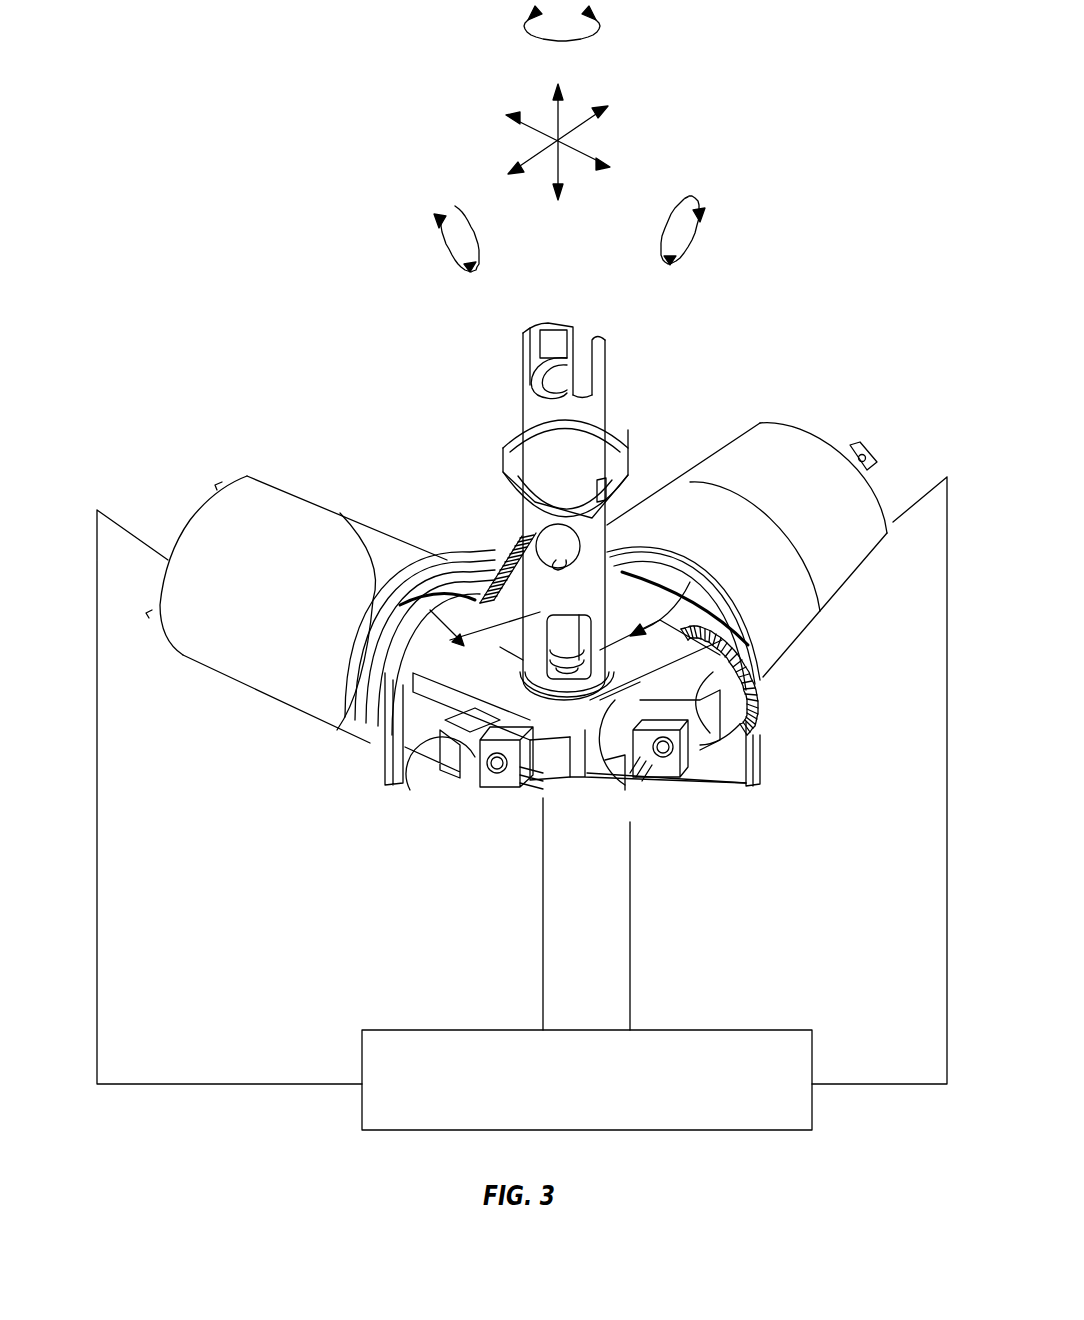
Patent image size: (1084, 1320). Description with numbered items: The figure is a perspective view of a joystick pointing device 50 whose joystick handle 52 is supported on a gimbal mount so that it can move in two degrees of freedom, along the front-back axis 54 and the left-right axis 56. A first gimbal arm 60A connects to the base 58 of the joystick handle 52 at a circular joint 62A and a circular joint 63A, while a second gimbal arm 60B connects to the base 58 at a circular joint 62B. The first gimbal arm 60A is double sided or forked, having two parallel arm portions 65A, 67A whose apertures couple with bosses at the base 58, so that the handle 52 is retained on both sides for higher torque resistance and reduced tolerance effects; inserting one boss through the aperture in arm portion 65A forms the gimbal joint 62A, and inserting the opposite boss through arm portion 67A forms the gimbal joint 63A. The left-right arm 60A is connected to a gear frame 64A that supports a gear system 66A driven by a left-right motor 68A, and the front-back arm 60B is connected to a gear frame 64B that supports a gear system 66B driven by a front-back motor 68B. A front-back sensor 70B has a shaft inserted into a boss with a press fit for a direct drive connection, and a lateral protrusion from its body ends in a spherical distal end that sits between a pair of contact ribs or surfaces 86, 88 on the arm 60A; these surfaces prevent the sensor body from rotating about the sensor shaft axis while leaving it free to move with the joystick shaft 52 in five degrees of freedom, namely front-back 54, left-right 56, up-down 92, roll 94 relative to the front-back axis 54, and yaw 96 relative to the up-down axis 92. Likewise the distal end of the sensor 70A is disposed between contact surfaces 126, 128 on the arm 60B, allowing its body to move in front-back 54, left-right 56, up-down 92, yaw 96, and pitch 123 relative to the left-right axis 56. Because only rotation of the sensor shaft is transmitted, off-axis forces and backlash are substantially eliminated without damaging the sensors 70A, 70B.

The pointing device 50 is at (776, 289).
The joystick handle 52 is at (600, 386).
The front-back axis 54 is at (590, 126).
The left-right axis 56 is at (594, 166).
The base 58 is at (584, 758).
The first gimbal arm 60A is at (697, 588).
The second gimbal arm 60B is at (430, 612).
The circular joint 62A is at (640, 787).
The circular joint 62B is at (446, 784).
The circular joint 63A is at (420, 578).
The gear frame 64A is at (640, 557).
The gear frame 64B is at (481, 546).
The arm portion 65A is at (603, 772).
The gear system 66A is at (762, 666).
The gear system 66B is at (513, 530).
The arm portion 67A is at (440, 556).
The left-right motor 68A is at (806, 428).
The front-back motor 68B is at (257, 478).
The sensor 70A is at (508, 786).
The front-back sensor 70B is at (666, 780).
The contact surface 86 is at (750, 728).
The contact surface 88 is at (692, 740).
The up-down axis 92 is at (562, 104).
The roll 94 is at (440, 208).
The yaw 96 is at (528, 36).
The pitch 123 is at (702, 202).
The contact surface 126 is at (440, 668).
The contact surface 128 is at (384, 778).